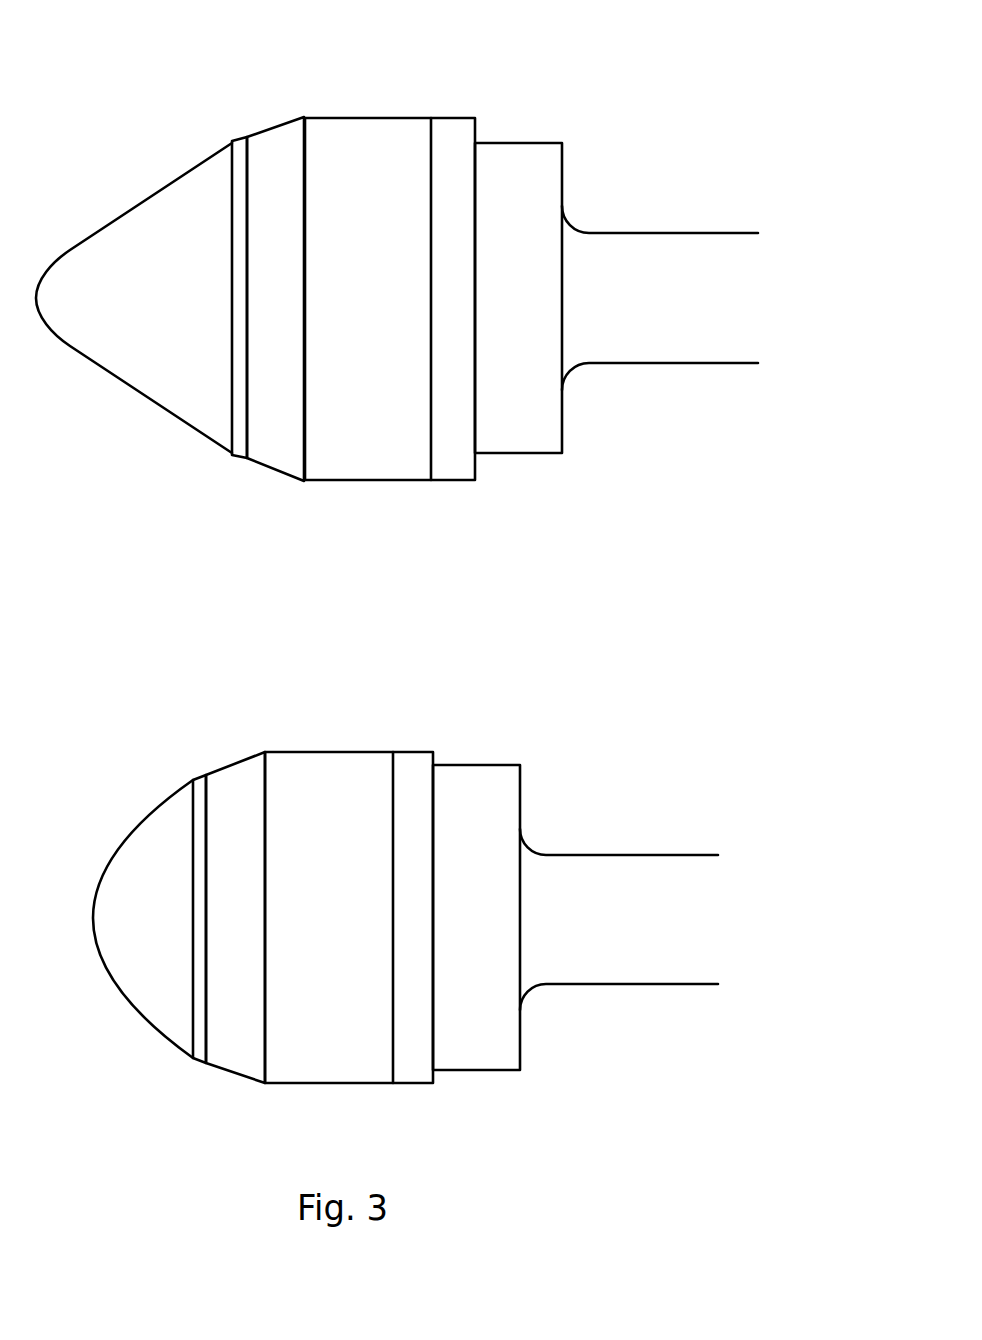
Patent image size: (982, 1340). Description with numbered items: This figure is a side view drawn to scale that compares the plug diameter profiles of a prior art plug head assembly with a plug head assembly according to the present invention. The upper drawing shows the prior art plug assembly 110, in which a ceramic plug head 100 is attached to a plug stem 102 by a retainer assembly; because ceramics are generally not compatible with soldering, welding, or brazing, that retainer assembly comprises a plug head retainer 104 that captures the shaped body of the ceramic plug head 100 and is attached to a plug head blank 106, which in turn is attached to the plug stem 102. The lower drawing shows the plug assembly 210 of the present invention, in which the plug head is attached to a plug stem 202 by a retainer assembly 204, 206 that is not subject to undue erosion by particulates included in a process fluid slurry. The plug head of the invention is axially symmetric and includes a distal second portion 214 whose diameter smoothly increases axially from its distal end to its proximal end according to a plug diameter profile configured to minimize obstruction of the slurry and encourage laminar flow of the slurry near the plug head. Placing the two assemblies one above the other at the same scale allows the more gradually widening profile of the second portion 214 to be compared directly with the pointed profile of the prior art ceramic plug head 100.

The plug assembly 110 is at (134, 91).
The ceramic plug head 100 is at (130, 297).
The plug head retainer 104 is at (339, 269).
The plug head blank 106 is at (497, 296).
The plug stem 102 is at (662, 309).
The plug assembly 210 is at (137, 702).
The second portion 214 is at (134, 927).
The retainer assembly 204 is at (300, 897).
The retainer assembly 206 is at (459, 922).
The plug stem 202 is at (592, 922).